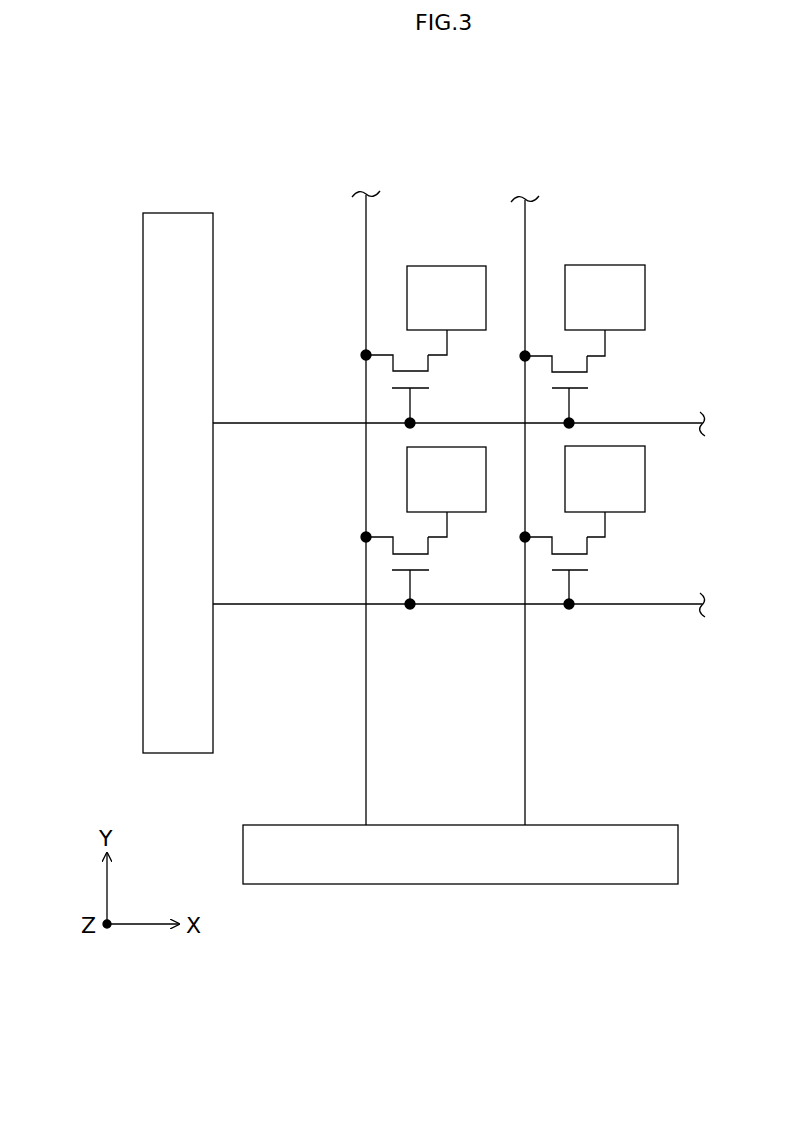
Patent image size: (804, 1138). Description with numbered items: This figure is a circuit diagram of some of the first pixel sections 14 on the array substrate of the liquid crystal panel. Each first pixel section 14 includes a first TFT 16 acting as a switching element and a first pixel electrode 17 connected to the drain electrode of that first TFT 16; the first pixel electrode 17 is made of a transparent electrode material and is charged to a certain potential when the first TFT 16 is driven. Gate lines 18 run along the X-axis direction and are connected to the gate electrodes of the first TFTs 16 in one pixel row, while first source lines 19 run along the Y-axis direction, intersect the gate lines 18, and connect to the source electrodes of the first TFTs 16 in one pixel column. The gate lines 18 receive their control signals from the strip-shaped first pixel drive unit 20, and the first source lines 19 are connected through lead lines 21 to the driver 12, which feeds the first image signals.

The driver 12 is at (462, 870).
The first pixel section 14 is at (435, 251).
The first TFT 16 is at (408, 371).
The first pixel electrode 17 is at (470, 266).
The gate line 18 is at (674, 420).
The first source line 19 is at (365, 211).
The first pixel drive unit 20 is at (142, 327).
The lead line 21 is at (366, 763).